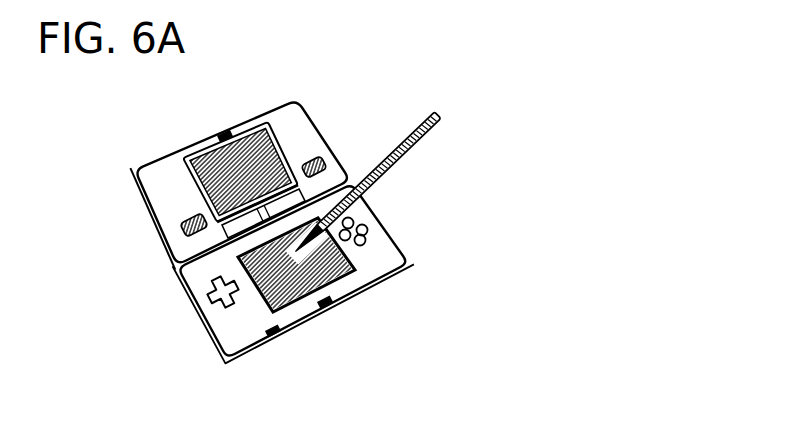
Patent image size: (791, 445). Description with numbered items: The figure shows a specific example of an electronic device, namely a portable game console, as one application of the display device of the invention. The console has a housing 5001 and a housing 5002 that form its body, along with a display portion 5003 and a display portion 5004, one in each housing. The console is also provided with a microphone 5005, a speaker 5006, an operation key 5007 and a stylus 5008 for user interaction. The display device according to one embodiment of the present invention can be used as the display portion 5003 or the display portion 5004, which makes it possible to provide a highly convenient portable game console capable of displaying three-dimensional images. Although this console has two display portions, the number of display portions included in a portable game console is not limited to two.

The housing 5001 is at (227, 331).
The housing 5002 is at (160, 205).
The display portion 5003 is at (280, 295).
The display portion 5004 is at (222, 162).
The microphone 5005 is at (267, 337).
The speaker 5006 is at (318, 153).
The operation key 5007 is at (208, 297).
The stylus 5008 is at (407, 138).